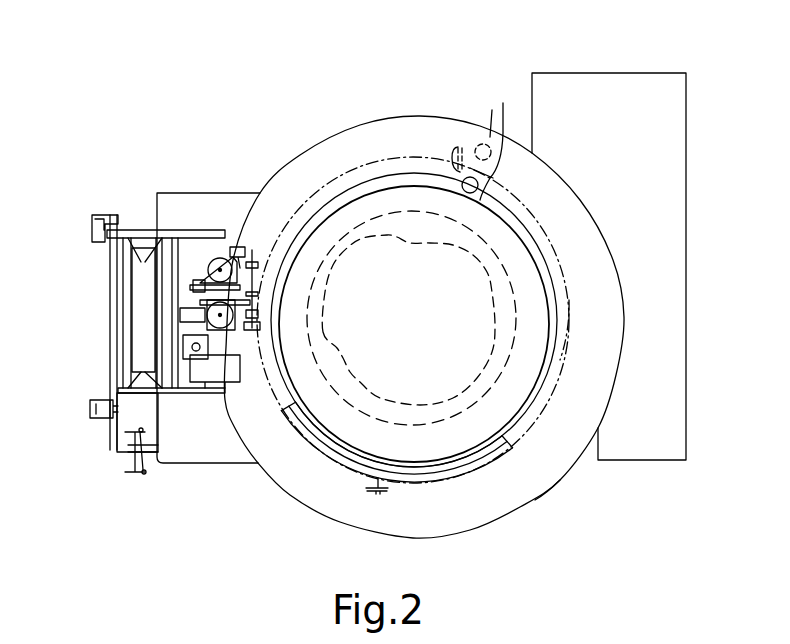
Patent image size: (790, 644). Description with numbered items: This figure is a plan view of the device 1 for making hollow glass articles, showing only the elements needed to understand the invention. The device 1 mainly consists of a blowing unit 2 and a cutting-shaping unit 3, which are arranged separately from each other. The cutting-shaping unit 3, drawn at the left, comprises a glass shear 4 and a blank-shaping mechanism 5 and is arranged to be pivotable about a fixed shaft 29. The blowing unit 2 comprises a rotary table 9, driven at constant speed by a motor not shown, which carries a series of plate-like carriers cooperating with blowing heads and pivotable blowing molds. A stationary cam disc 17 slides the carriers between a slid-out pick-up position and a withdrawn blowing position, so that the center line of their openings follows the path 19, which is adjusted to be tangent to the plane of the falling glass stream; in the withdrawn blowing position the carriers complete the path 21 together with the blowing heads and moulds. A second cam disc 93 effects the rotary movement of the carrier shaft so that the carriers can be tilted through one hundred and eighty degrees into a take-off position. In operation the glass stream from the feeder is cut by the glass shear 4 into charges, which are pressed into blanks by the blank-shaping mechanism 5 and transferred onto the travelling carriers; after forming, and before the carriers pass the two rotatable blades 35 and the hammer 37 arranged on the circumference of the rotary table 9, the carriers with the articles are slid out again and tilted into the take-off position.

The device 1 is at (692, 70).
The blowing unit 2 is at (304, 132).
The cutting-shaping unit 3 is at (208, 152).
The glass shear 4 is at (232, 340).
The blank-shaping mechanism 5 is at (255, 262).
The rotary table 9 is at (533, 503).
The stationary cam disc 17 is at (462, 413).
The path 19 is at (546, 225).
The path 21 is at (567, 345).
The fixed shaft 29 is at (110, 288).
The rotatable blades 35 is at (486, 148).
The hammer 37 is at (456, 152).
The second cam disc 93 is at (337, 286).